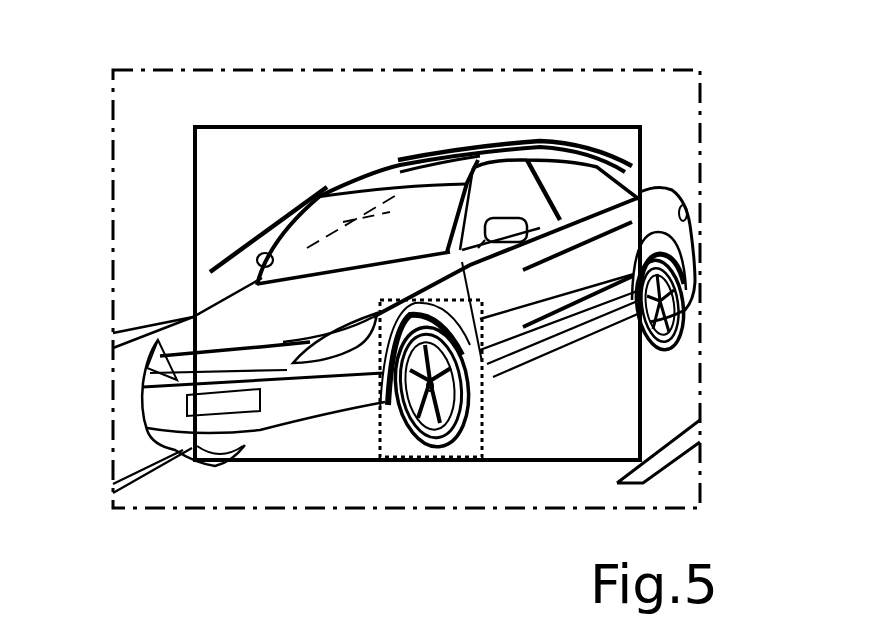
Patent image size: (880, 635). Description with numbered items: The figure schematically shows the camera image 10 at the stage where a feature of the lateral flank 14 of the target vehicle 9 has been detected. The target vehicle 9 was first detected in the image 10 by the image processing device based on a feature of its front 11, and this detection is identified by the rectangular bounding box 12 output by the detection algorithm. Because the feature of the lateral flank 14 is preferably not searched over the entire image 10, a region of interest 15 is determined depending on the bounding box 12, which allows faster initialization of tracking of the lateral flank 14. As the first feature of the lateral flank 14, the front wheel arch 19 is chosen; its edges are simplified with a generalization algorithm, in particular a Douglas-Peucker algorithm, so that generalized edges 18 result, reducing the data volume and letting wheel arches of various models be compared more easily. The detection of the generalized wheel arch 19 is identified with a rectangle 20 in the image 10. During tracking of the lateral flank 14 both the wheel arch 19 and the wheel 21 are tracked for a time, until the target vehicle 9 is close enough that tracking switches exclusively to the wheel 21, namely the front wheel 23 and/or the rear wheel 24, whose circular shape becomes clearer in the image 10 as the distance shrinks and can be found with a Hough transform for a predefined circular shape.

The target vehicle 9 is at (645, 208).
The image 10 is at (703, 307).
The front 11 is at (150, 402).
The bounding box 12 is at (641, 157).
The lateral flank 14 is at (637, 333).
The region of interest 15 is at (642, 418).
The generalized edges 18 is at (437, 185).
The wheel arch 19 is at (652, 268).
The rectangle 20 is at (483, 412).
The wheel 21 is at (415, 428).
The front wheel 23 is at (457, 435).
The rear wheel 24 is at (678, 347).